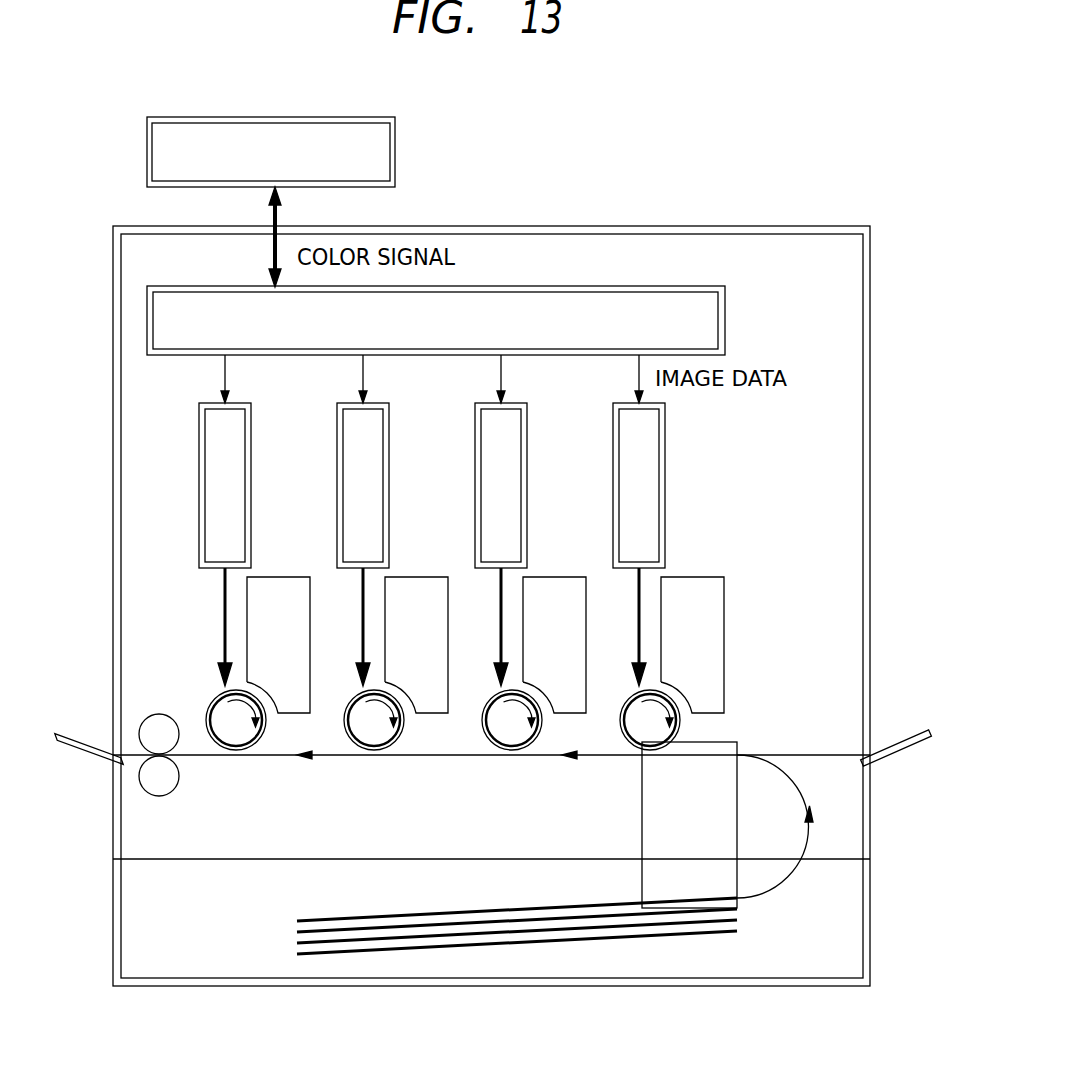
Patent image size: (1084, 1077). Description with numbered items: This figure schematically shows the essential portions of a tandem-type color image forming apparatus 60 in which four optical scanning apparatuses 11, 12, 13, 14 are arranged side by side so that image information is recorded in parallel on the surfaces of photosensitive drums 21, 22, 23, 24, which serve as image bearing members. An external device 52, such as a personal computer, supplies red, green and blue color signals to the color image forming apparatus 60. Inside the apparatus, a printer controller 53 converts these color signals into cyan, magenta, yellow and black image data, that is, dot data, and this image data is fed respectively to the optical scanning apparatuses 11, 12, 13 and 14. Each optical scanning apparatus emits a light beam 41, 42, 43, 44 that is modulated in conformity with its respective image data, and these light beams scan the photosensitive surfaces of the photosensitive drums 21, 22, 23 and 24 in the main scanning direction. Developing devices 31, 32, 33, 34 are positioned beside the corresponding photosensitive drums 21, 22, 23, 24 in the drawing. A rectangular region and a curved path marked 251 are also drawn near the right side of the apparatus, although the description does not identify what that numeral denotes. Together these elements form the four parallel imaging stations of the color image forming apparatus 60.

The optical scanning apparatus 11 is at (217, 460).
The optical scanning apparatus 12 is at (355, 460).
The optical scanning apparatus 13 is at (493, 460).
The optical scanning apparatus 14 is at (629, 460).
The photosensitive drum 21 is at (236, 737).
The photosensitive drum 22 is at (374, 737).
The photosensitive drum 23 is at (512, 737).
The photosensitive drum 24 is at (650, 735).
The developing device 31 is at (287, 586).
The developing device 32 is at (425, 586).
The developing device 33 is at (563, 586).
The developing device 34 is at (701, 586).
The light beam 41 is at (226, 636).
The light beam 42 is at (364, 636).
The light beam 43 is at (502, 636).
The light beam 44 is at (640, 636).
The external device 52 is at (395, 141).
The printer controller 53 is at (725, 315).
The color image forming apparatus 60 is at (741, 222).
The paper transport path 251 is at (791, 773).